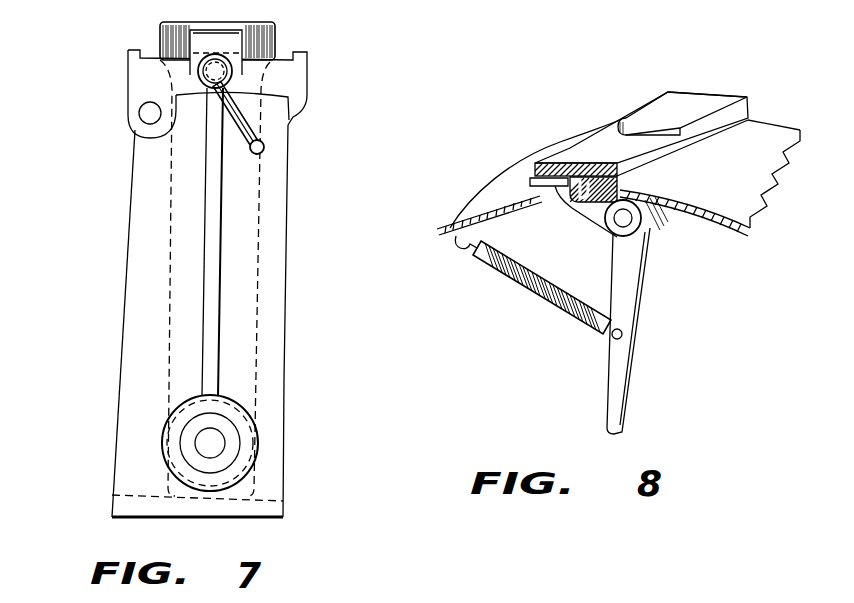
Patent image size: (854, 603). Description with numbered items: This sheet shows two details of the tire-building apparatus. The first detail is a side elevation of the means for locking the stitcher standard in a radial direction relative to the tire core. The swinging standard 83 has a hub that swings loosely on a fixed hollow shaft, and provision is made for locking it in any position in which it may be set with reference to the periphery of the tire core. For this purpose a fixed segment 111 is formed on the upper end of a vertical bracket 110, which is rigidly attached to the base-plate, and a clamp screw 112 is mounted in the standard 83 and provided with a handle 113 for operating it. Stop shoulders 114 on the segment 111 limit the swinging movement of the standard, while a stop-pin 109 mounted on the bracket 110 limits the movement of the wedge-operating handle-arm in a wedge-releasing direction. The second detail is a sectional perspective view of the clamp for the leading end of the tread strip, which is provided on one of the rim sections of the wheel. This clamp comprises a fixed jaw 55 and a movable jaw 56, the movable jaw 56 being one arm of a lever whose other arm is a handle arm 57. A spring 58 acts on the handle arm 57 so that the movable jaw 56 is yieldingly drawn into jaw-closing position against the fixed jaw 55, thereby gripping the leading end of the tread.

In FIG. 7, the standard 83 is at (160, 33).
In FIG. 7, the stop-pin 109 is at (144, 116).
In FIG. 7, the vertical bracket 110 is at (143, 265).
In FIG. 7, the fixed segment 111 is at (277, 60).
In FIG. 7, the clamp screw 112 is at (222, 71).
In FIG. 7, the handle 113 is at (253, 125).
In FIG. 7, the stop shoulders 114 is at (127, 56).
In FIG. 8, the fixed jaw 55 is at (575, 158).
In FIG. 8, the movable jaw 56 is at (583, 212).
In FIG. 8, the handle arm 57 is at (623, 287).
In FIG. 8, the spring 58 is at (535, 297).